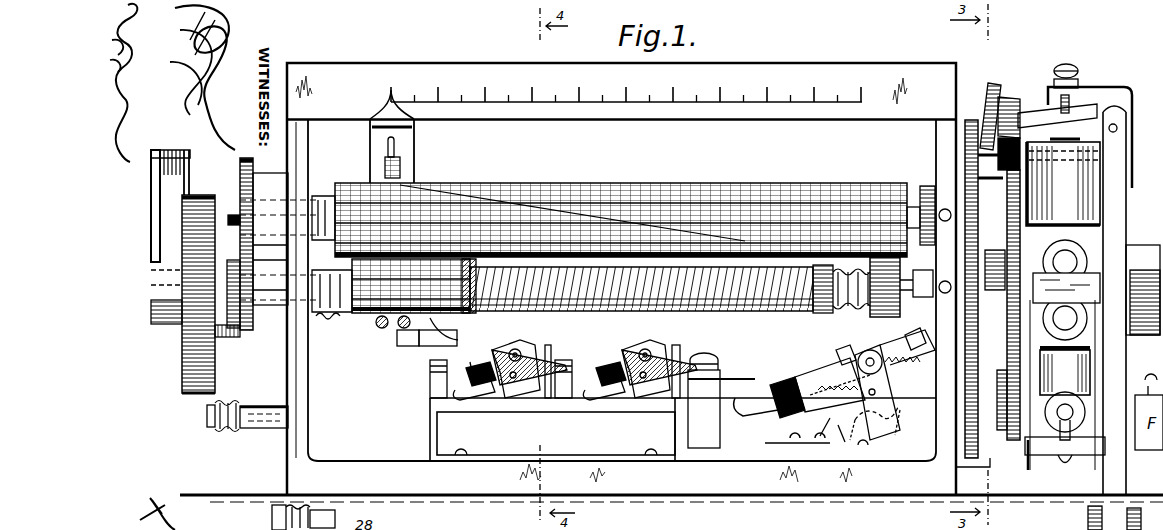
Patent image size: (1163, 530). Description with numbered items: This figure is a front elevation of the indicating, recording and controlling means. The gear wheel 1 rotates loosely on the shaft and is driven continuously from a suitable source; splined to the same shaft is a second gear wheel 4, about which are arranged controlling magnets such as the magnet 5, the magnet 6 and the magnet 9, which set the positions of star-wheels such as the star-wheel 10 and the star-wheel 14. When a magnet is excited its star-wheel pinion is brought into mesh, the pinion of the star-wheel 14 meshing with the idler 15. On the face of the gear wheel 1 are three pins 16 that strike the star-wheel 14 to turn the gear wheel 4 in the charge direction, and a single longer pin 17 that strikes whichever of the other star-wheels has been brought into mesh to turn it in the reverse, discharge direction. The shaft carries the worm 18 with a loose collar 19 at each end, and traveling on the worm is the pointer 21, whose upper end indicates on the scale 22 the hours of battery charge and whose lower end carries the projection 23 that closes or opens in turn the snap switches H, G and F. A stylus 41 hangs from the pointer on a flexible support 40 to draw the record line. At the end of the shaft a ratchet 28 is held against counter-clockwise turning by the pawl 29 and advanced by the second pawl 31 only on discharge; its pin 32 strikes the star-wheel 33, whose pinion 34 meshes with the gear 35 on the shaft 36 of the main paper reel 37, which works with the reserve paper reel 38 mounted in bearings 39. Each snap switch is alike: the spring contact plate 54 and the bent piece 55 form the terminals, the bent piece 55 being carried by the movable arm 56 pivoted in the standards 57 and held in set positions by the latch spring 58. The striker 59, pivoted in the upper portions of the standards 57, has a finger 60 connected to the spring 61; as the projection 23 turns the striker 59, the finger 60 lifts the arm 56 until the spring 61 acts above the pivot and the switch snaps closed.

The gear wheel 1 is at (980, 355).
The second gear wheel 4 is at (1007, 206).
The magnet 5 is at (1085, 250).
The magnet 6 is at (1065, 394).
The magnet 9 is at (1063, 182).
The star-wheel 10 is at (1054, 289).
The star-wheel 14 is at (988, 100).
The idler 15 is at (1013, 135).
The pins 16 is at (999, 157).
The pin 17 is at (991, 187).
The worm 18 is at (738, 314).
The loose collar 19 is at (820, 314).
The pointer 21 is at (414, 174).
The scale 22 is at (661, 91).
The projection 23 is at (480, 328).
The ratchet 28 is at (240, 203).
The pawl 29 is at (213, 422).
The second pawl 31 is at (197, 195).
The pin 32 is at (183, 345).
The star-wheel 33 is at (235, 337).
The pinion 34 is at (262, 330).
The gear 35 is at (254, 173).
The shaft 36 is at (156, 250).
The main paper reel 37 is at (900, 181).
The reserve paper reel 38 is at (378, 328).
The bearings 39 is at (322, 320).
The flexible support 40 is at (388, 146).
The stylus 41 is at (385, 170).
The spring contact plate 54 is at (712, 378).
The bent piece 55 is at (762, 409).
The movable arm 56 is at (783, 385).
The standards 57 is at (880, 427).
The latch spring 58 is at (805, 426).
The striker 59 is at (840, 370).
The finger 60 is at (826, 375).
The spring 61 is at (922, 345).
The snap switch F is at (880, 410).
The snap switch G is at (648, 395).
The snap switch H is at (520, 398).